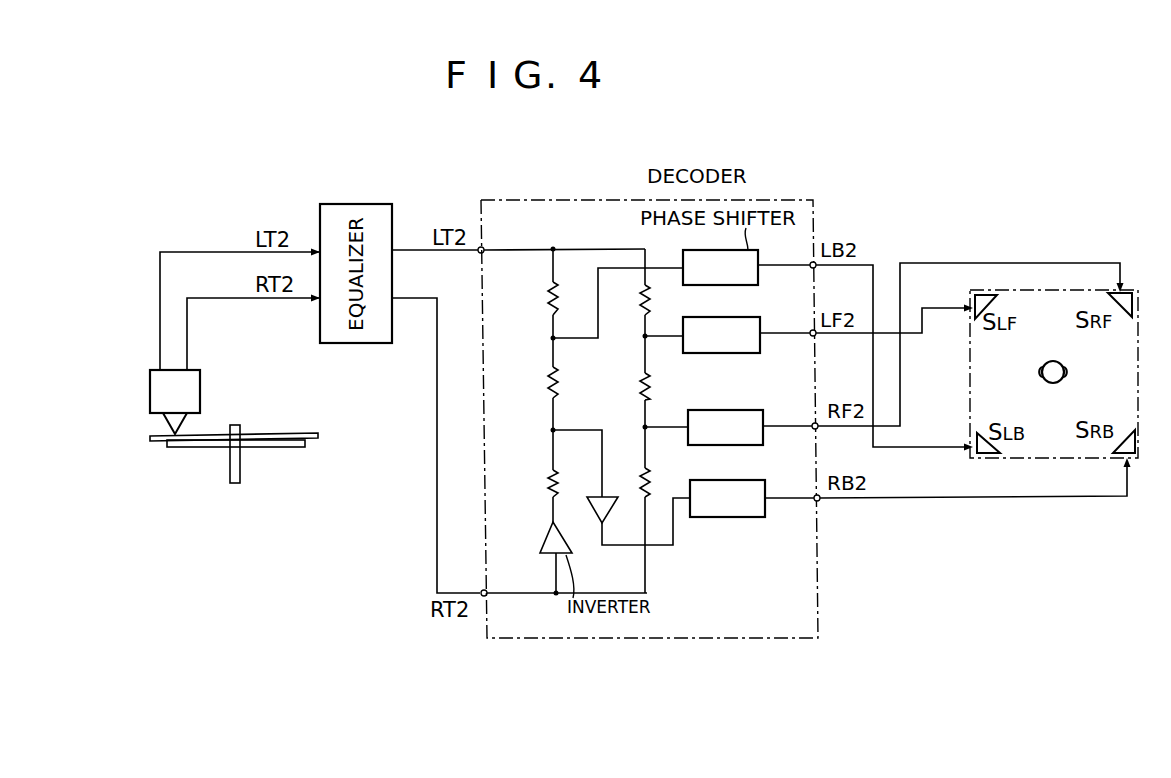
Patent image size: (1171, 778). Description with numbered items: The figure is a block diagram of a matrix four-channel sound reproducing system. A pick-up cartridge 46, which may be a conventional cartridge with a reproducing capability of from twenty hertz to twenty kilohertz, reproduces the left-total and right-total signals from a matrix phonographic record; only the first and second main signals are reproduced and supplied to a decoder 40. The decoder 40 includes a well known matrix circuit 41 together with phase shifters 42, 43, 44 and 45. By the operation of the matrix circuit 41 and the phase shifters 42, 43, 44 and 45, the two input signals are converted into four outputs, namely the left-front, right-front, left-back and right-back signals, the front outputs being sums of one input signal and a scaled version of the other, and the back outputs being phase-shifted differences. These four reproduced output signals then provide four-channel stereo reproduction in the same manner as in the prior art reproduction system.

The decoder 40 is at (507, 210).
The matrix circuit 41 is at (607, 386).
The phase shifter 42 is at (748, 286).
The phase shifter 43 is at (748, 354).
The phase shifter 44 is at (750, 446).
The phase shifter 45 is at (750, 518).
The pick-up cartridge 46 is at (200, 388).